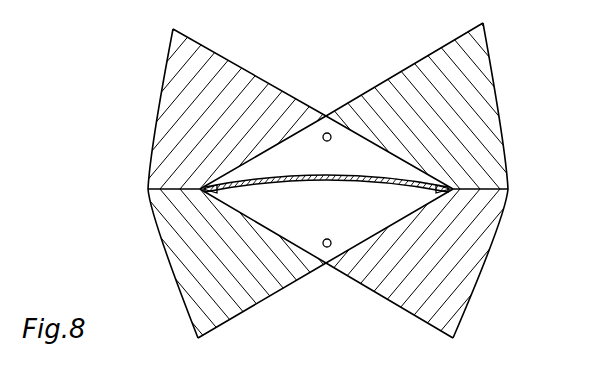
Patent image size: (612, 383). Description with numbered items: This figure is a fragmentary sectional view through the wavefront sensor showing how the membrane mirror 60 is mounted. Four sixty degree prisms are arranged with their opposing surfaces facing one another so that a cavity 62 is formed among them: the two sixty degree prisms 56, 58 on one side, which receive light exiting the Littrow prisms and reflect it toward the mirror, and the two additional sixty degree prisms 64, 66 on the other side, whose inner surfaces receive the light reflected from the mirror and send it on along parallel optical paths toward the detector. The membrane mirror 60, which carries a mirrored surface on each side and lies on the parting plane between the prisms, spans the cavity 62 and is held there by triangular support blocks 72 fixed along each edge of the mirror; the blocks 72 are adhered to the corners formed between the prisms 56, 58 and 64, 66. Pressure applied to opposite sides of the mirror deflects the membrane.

The 60 degree prism 56 is at (262, 295).
The 60 degree prism 58 is at (204, 63).
The membrane mirror 60 is at (332, 182).
The cavity 62 is at (302, 153).
The 60 degree prism 64 is at (395, 292).
The 60 degree prism 66 is at (427, 73).
The triangular support block 72 is at (437, 181).